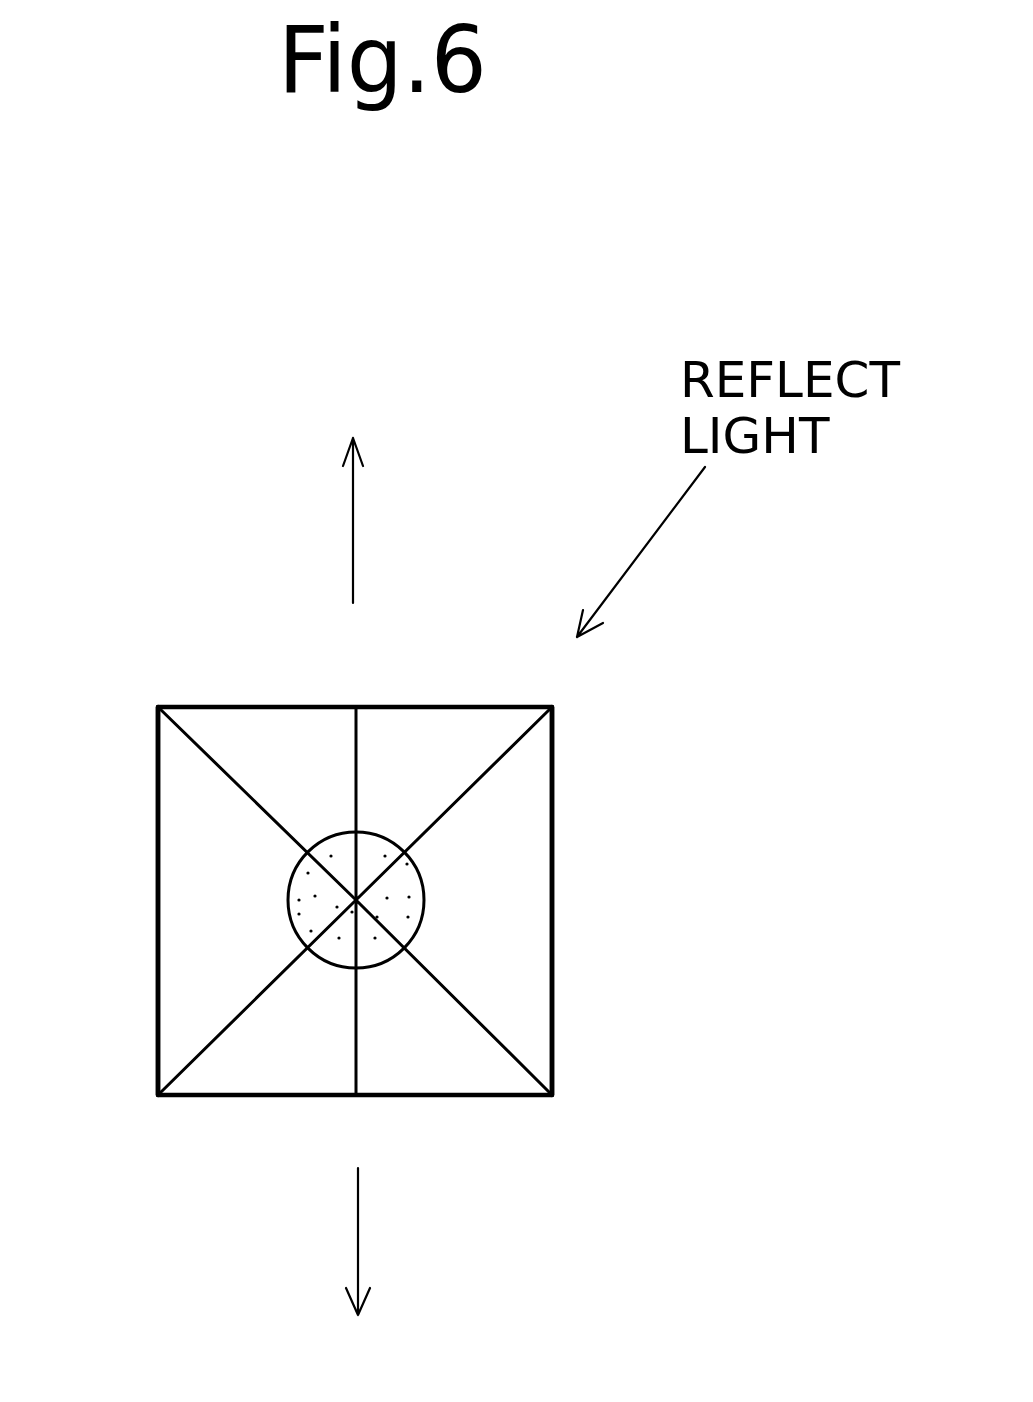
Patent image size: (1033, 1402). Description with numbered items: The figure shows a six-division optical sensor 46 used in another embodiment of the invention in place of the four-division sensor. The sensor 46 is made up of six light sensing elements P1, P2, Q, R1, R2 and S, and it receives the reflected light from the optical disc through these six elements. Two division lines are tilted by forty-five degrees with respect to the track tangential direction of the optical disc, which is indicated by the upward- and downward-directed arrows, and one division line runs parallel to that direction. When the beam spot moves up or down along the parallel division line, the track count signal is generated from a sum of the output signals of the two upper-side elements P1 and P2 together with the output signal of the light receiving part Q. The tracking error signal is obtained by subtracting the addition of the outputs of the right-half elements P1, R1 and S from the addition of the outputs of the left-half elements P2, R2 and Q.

The six-division optical sensor 46 is at (673, 795).
The light sensing element P1 is at (445, 733).
The light sensing element P2 is at (258, 733).
The light sensing element R1 is at (450, 1073).
The light sensing element R2 is at (262, 1073).
The light receiving part Q is at (177, 902).
The light sensing element S is at (537, 900).